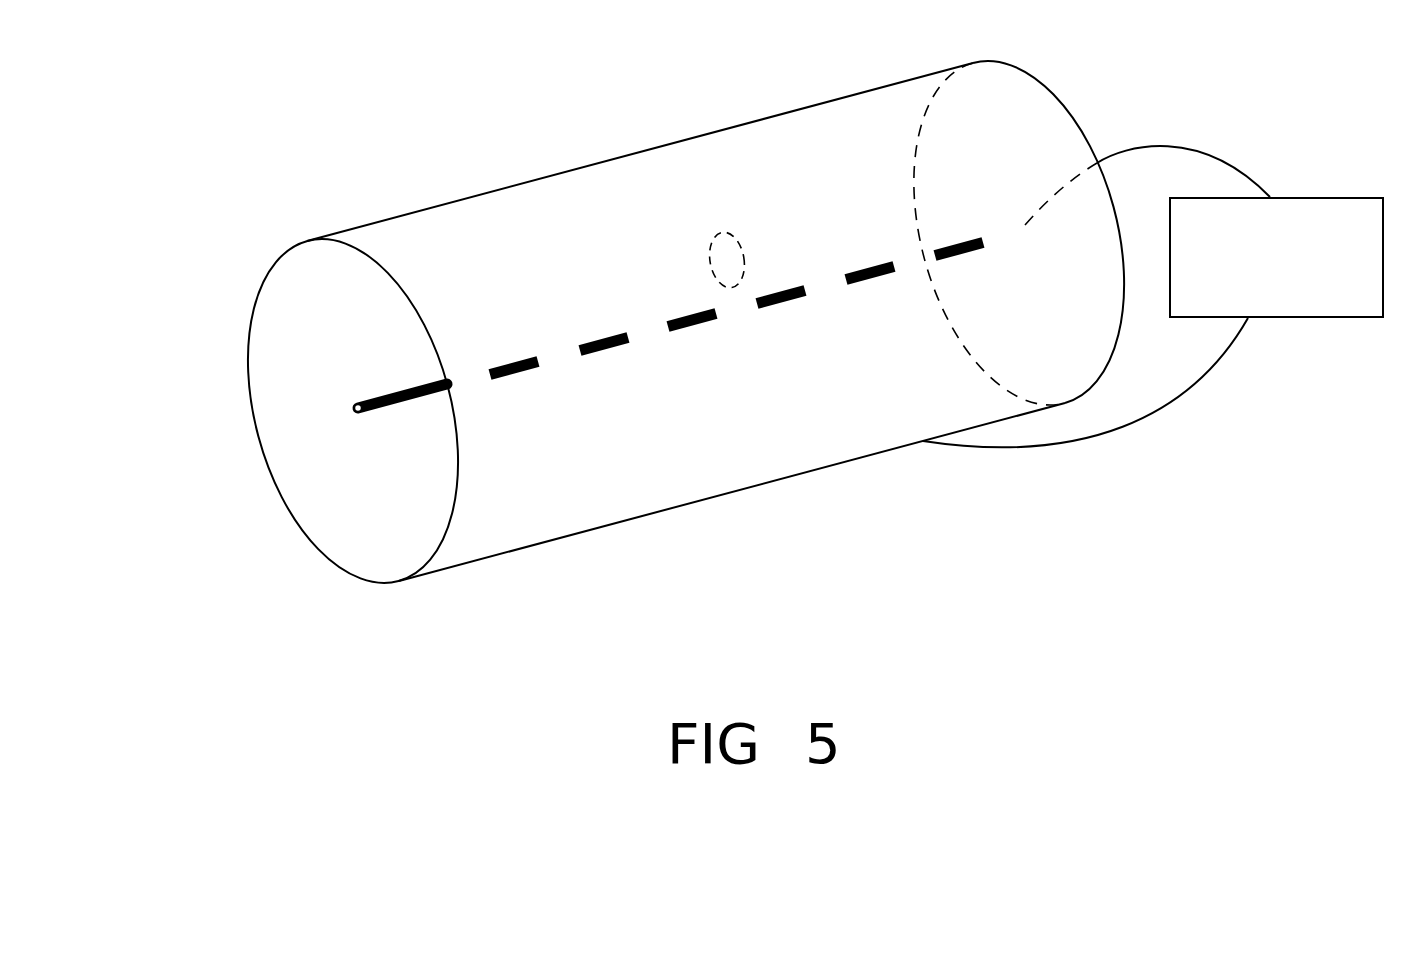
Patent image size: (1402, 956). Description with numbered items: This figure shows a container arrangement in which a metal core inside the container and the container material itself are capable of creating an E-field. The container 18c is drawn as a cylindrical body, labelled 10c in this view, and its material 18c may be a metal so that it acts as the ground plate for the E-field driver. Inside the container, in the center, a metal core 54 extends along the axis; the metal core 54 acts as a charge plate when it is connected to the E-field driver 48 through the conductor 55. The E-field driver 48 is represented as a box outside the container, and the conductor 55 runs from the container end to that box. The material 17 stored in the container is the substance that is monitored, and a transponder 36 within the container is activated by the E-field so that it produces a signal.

The tubular sensor electrode 10c is at (437, 238).
The material stored in the container 17 is at (638, 487).
The container 18c is at (247, 322).
The transponder 36 is at (735, 250).
The E-field driver 48 is at (1350, 219).
The metal core 54 is at (353, 407).
The conductor 55 is at (1073, 445).